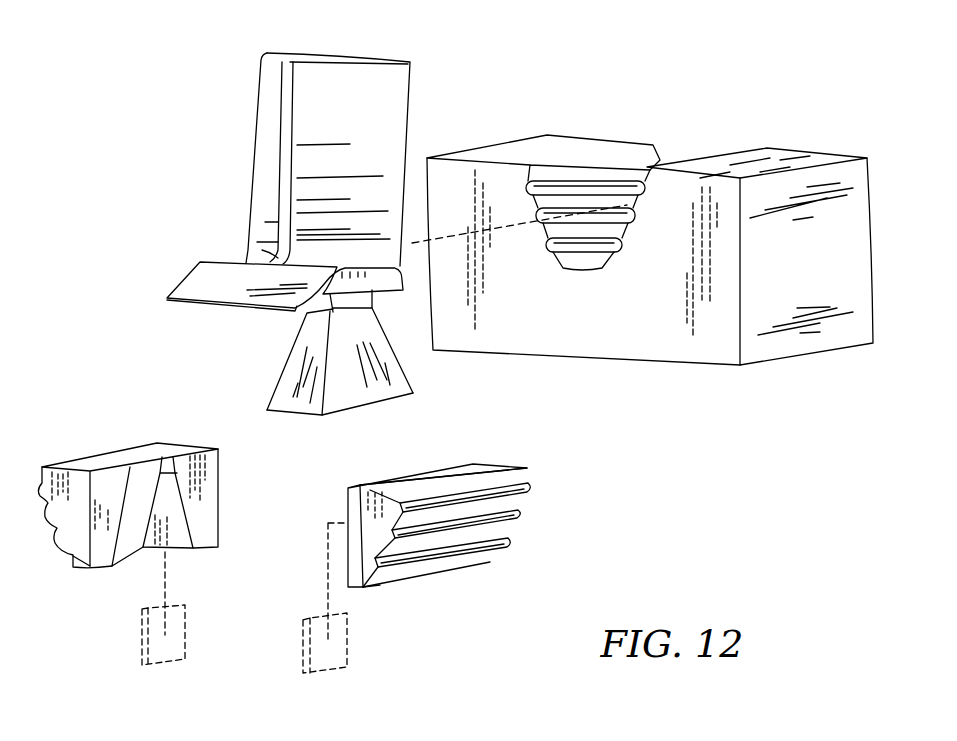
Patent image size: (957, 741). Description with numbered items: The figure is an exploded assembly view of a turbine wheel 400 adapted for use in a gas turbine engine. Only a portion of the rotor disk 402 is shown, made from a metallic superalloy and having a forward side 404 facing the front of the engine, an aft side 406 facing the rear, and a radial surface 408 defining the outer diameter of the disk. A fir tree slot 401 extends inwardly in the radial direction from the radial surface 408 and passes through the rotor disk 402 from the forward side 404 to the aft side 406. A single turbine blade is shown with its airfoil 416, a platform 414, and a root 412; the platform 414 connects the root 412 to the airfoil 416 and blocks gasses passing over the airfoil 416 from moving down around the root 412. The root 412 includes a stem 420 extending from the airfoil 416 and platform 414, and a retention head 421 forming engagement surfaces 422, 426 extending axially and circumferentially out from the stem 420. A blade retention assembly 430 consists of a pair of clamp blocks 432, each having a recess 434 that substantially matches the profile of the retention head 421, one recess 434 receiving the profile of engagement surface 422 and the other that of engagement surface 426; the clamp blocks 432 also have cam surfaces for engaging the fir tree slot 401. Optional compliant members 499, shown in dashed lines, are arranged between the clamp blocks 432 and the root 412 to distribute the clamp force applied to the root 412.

The turbine wheel 400 is at (137, 55).
The fir tree slot 401 is at (570, 267).
The rotor disk 402 is at (785, 222).
The forward side 404 is at (673, 350).
The aft side 406 is at (873, 233).
The radial surface 408 is at (788, 160).
The root 412 is at (311, 379).
The platform 414 is at (197, 263).
The airfoil 416 is at (267, 155).
The stem 420 is at (345, 312).
The retention head 421 is at (297, 373).
The engagement surface 422 is at (298, 405).
The engagement surface 426 is at (403, 362).
The blade retention assembly 430 is at (267, 531).
The clamp block 432 is at (82, 552).
The recess 434 is at (142, 485).
The compliant member 499 is at (143, 665).